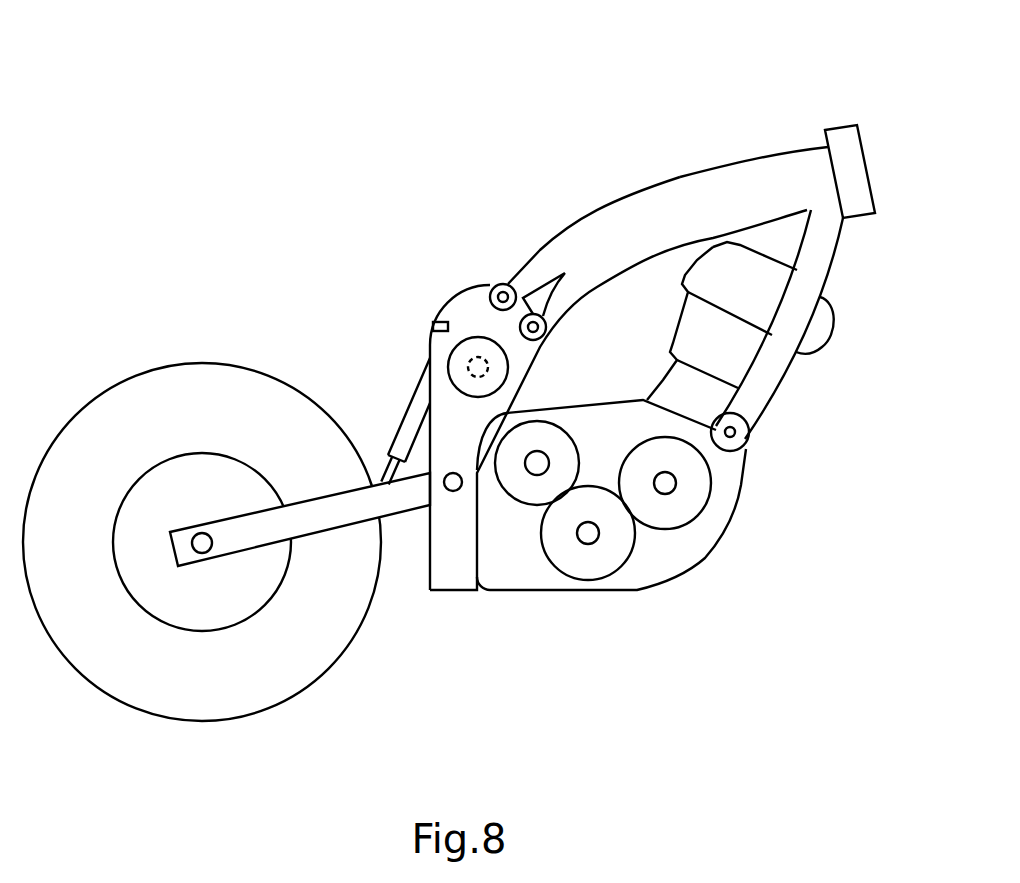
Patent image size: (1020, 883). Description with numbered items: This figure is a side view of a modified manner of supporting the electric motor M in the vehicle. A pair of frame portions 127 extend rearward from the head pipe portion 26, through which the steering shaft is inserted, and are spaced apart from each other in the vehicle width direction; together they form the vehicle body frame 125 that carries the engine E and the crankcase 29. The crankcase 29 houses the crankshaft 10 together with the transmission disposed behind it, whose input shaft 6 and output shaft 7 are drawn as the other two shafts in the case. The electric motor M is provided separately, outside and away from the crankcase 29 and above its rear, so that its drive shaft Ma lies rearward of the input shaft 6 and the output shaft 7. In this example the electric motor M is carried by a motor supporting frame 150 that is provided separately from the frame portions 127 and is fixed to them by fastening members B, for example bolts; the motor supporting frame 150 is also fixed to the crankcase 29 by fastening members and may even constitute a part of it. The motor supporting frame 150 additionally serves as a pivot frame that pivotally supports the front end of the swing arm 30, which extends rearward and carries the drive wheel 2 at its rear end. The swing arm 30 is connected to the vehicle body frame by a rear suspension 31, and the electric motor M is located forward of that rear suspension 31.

The drive wheel 2 is at (163, 376).
The swing arm 30 is at (328, 500).
The rear suspension 31 is at (409, 403).
The motor supporting frame 150 is at (453, 310).
The electric motor M is at (478, 338).
The drive shaft Ma is at (460, 375).
The fastening members B is at (535, 325).
The frame portions 127 is at (620, 197).
The main frame 125 is at (681, 175).
The head pipe portion 26 is at (843, 137).
The engine E is at (830, 322).
The crankcase 29 is at (663, 577).
The output shaft 7 is at (540, 457).
The input shaft 6 is at (590, 540).
The crankshaft 10 is at (672, 482).